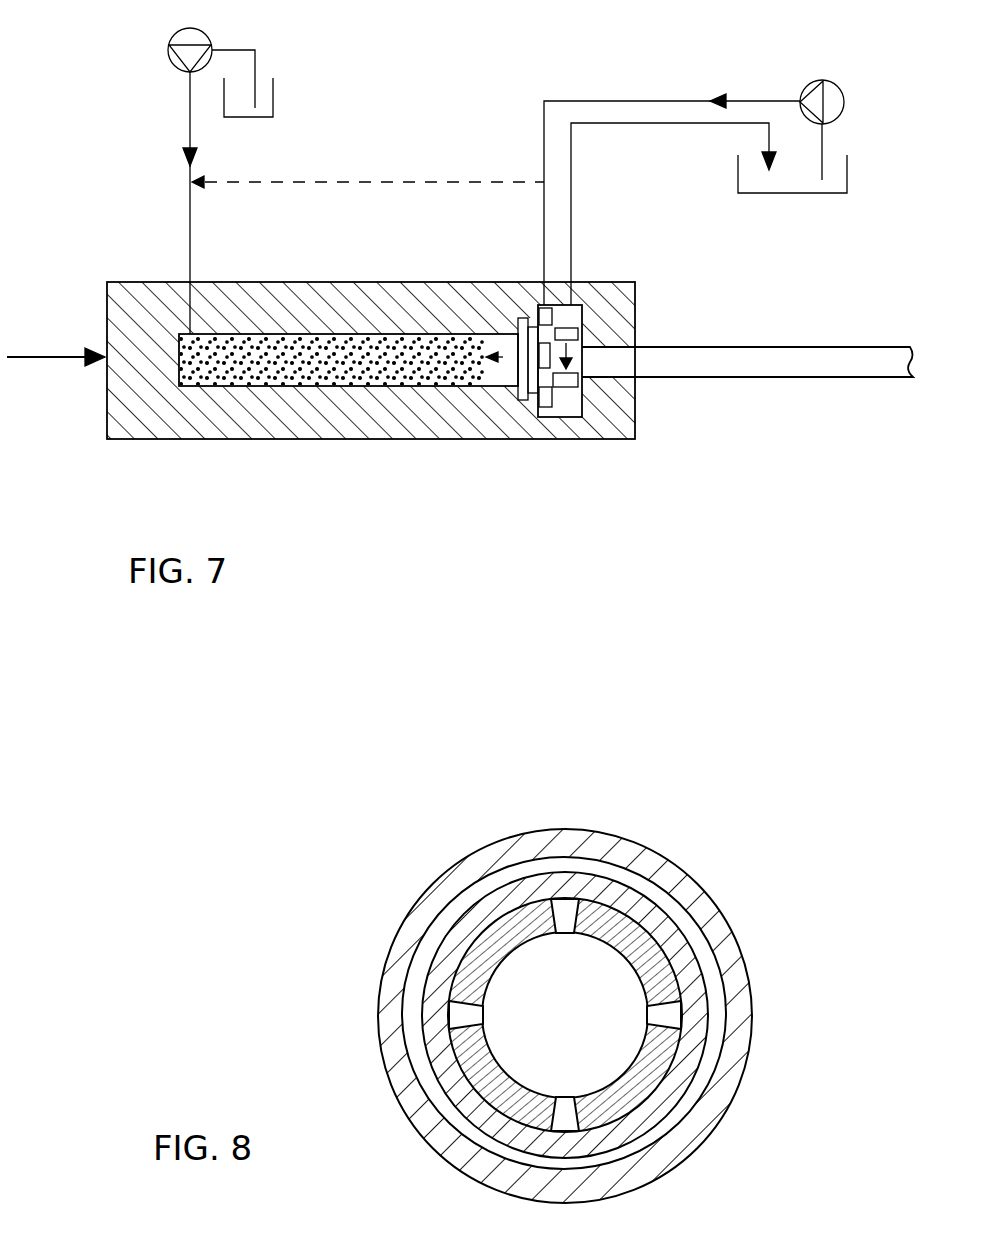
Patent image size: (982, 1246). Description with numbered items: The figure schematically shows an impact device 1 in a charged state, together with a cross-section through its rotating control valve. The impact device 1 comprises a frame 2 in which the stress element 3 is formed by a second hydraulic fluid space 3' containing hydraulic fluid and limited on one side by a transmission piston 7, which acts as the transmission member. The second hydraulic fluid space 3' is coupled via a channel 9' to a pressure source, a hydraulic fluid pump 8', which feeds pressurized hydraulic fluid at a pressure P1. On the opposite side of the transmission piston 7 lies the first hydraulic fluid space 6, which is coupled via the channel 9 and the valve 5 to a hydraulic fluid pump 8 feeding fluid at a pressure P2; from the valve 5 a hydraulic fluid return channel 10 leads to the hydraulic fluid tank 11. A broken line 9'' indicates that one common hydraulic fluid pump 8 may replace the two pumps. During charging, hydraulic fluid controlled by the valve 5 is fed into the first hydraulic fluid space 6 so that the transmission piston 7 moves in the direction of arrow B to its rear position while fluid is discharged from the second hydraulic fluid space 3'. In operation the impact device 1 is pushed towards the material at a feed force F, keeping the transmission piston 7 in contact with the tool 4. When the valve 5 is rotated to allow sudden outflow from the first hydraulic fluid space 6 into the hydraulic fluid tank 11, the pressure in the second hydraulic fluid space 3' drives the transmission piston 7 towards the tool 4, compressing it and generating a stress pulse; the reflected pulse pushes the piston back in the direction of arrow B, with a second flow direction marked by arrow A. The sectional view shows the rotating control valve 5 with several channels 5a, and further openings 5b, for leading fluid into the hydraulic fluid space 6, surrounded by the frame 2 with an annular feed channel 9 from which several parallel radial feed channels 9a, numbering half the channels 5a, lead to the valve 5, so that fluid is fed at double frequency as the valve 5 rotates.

In FIG. 7, the impact device 1 is at (145, 245).
In FIG. 7, the frame 2 is at (333, 440).
In FIG. 8, the frame 2 is at (490, 848).
In FIG. 7, the stress element 3 is at (332, 295).
In FIG. 7, the second hydraulic fluid space 3' is at (348, 304).
In FIG. 7, the tool 4 is at (730, 367).
In FIG. 7, the valve 5 is at (590, 305).
In FIG. 8, the valve 5 is at (497, 1160).
In FIG. 7, the channels 5a is at (542, 418).
In FIG. 8, the channels 5a is at (675, 1018).
In FIG. 7, the valve passages 5b is at (568, 417).
In FIG. 7, the first hydraulic fluid space 6 is at (530, 397).
In FIG. 8, the first hydraulic fluid space 6 is at (577, 1043).
In FIG. 7, the transmission piston 7 is at (520, 318).
In FIG. 7, the hydraulic fluid pump 8 is at (778, 95).
In FIG. 7, the hydraulic fluid pump 8' is at (164, 63).
In FIG. 7, the channel 9 is at (622, 178).
In FIG. 8, the channel 9 is at (528, 1015).
In FIG. 7, the channel 9' is at (146, 203).
In FIG. 7, the broken line 9'' is at (368, 143).
In FIG. 8, the radial feed channels 9a is at (657, 915).
In FIG. 7, the hydraulic fluid return channel 10 is at (582, 124).
In FIG. 7, the hydraulic fluid tank 11 is at (248, 118).
In FIG. 7, the flow direction A is at (600, 352).
In FIG. 7, the arrow B is at (505, 397).
In FIG. 7, the force F is at (56, 333).
In FIG. 7, the pressure P1 is at (163, 118).
In FIG. 7, the pressure P2 is at (630, 67).